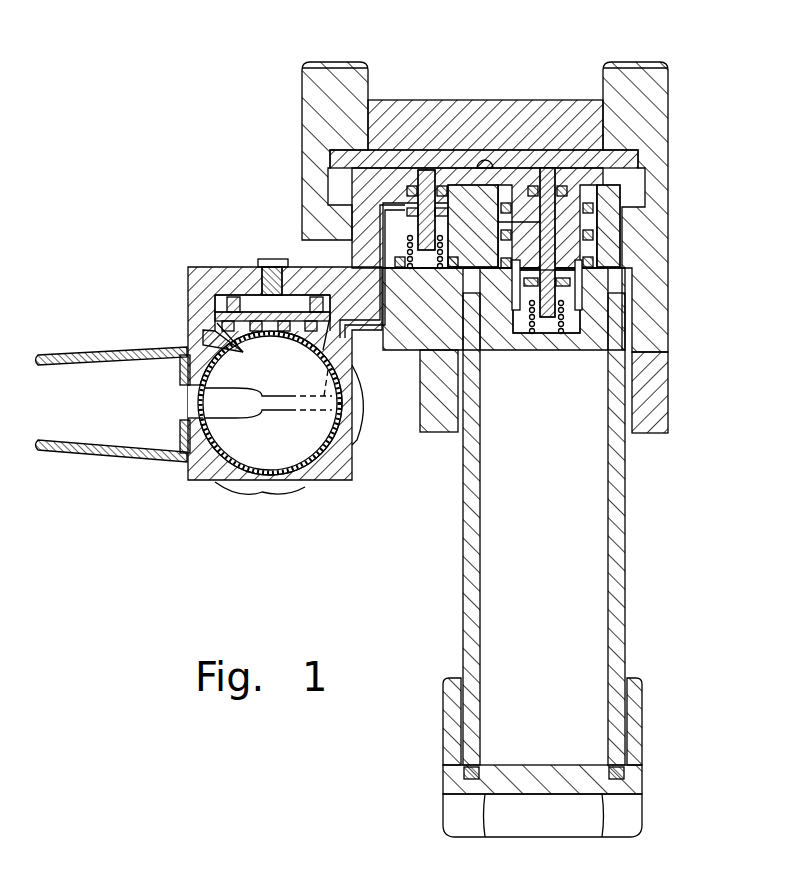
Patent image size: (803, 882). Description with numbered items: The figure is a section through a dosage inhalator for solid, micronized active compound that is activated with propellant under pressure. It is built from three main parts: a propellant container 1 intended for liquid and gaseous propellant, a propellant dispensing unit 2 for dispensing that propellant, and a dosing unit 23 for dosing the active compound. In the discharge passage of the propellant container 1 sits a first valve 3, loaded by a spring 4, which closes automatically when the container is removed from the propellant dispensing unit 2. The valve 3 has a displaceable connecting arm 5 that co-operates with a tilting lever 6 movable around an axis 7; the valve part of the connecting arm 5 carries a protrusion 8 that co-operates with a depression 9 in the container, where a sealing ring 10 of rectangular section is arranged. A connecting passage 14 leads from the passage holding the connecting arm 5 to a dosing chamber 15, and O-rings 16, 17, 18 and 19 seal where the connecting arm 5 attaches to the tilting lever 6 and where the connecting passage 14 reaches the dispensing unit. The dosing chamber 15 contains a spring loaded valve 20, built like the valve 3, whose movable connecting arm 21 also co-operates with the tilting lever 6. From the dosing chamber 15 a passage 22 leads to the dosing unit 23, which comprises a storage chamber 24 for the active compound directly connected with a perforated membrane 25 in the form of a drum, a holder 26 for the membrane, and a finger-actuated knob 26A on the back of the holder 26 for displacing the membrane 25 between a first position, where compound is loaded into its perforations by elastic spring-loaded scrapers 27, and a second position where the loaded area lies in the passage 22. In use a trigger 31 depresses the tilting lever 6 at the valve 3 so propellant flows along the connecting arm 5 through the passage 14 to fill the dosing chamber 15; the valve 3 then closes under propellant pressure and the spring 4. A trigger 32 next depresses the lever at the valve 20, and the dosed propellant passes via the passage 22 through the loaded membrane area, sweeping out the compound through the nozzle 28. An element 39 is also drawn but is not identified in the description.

The propellant container 1 is at (627, 526).
The propellant dispensing unit 2 is at (668, 238).
The first valve 3 is at (565, 318).
The spring 4 is at (577, 336).
The connecting arm 5 is at (600, 258).
The tilting lever 6 is at (632, 176).
The axis 7 is at (466, 236).
The protrusion 8 is at (566, 306).
The depression 9 is at (560, 283).
The sealing ring 10 is at (492, 295).
The connecting passage 14 is at (506, 182).
The dosing chamber 15 is at (408, 255).
The O-ring 16 is at (560, 185).
The O-ring 17 is at (600, 210).
The O-ring 18 is at (600, 247).
The O-ring 19 is at (627, 275).
The spring loaded valve 20 is at (402, 242).
The connecting arm 21 is at (440, 160).
The passage 22 is at (401, 352).
The dosing unit 23 is at (197, 273).
The storage chamber 24 is at (243, 355).
The perforated membrane 25 is at (257, 484).
The holder 26 is at (222, 470).
The finger-actuated knob 26A is at (298, 482).
The scrapers 27 is at (228, 348).
The nozzle 28 is at (121, 461).
The trigger 31 is at (642, 63).
The trigger 32 is at (334, 62).
The stem 39 is at (264, 262).